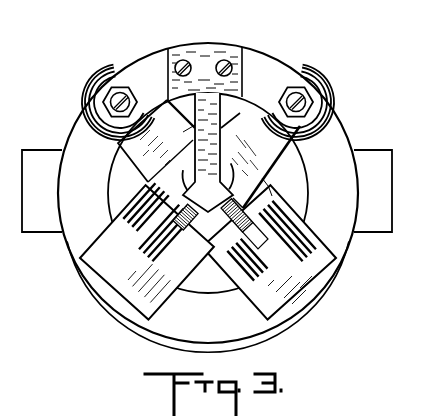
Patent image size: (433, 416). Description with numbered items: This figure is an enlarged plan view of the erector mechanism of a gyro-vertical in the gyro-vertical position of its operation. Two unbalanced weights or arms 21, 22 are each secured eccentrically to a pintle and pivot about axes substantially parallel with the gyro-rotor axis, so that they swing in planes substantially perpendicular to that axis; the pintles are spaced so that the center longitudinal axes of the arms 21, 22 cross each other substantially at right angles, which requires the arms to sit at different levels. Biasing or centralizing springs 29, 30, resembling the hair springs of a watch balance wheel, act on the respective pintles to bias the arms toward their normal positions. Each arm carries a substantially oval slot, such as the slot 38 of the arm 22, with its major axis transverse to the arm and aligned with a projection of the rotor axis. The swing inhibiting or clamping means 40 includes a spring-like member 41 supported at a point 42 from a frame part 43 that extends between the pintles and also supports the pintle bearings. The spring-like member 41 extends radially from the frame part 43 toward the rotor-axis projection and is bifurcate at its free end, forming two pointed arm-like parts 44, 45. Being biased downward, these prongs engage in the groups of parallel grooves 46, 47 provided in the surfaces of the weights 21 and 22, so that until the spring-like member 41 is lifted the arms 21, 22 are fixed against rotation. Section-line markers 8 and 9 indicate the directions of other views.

The section line / view arrows 8 is at (60, 192).
The view direction arrows 9 is at (343, 46).
The weight 21 is at (147, 157).
The weight 22 is at (238, 115).
The biasing spring 29 is at (95, 78).
The biasing spring 30 is at (294, 67).
The slot 38 is at (265, 180).
The swing inhibiting or clamping means 40 is at (200, 55).
The spring-like member 41 is at (177, 134).
The support point of spring-like member 42 is at (182, 59).
The frame part 43 is at (145, 58).
The arm-like part 44 is at (280, 206).
The arm-like part 45 is at (185, 263).
The grooves 46 is at (265, 275).
The grooves 47 is at (142, 258).